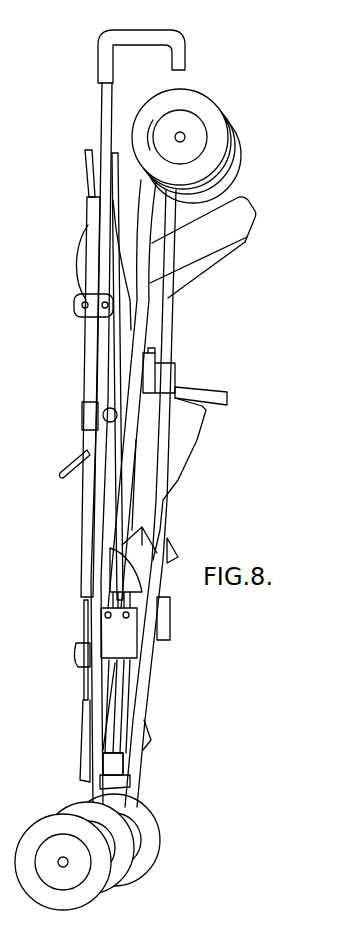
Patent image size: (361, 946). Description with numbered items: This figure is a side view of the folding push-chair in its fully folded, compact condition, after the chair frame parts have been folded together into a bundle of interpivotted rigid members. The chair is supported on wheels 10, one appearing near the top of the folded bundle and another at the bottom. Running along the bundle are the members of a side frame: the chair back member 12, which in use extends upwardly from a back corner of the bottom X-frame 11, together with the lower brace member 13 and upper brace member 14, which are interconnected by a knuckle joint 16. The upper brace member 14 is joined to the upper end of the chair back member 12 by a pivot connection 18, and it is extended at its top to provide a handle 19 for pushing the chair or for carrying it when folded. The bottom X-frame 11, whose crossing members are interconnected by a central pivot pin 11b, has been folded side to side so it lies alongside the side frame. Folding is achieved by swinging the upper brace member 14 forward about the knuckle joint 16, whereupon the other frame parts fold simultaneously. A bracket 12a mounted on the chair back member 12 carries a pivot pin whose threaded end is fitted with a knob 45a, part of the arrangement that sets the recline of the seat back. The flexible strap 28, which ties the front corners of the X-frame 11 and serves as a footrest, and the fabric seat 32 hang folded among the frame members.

The wheels 10 is at (210, 102).
The bottom X-frame 11 is at (138, 693).
The central pivot pin 11b is at (126, 768).
The chair back member 12 is at (90, 372).
The bracket 12a is at (82, 415).
The lower brace member 13 is at (140, 325).
The upper brace member 14 is at (100, 116).
The knuckle joint 16 is at (128, 638).
The pivot connection 18 is at (77, 306).
The handles 19 is at (176, 48).
The flexible strap 28 is at (218, 235).
The fabric seat 32 is at (187, 423).
The knob 45a is at (88, 428).